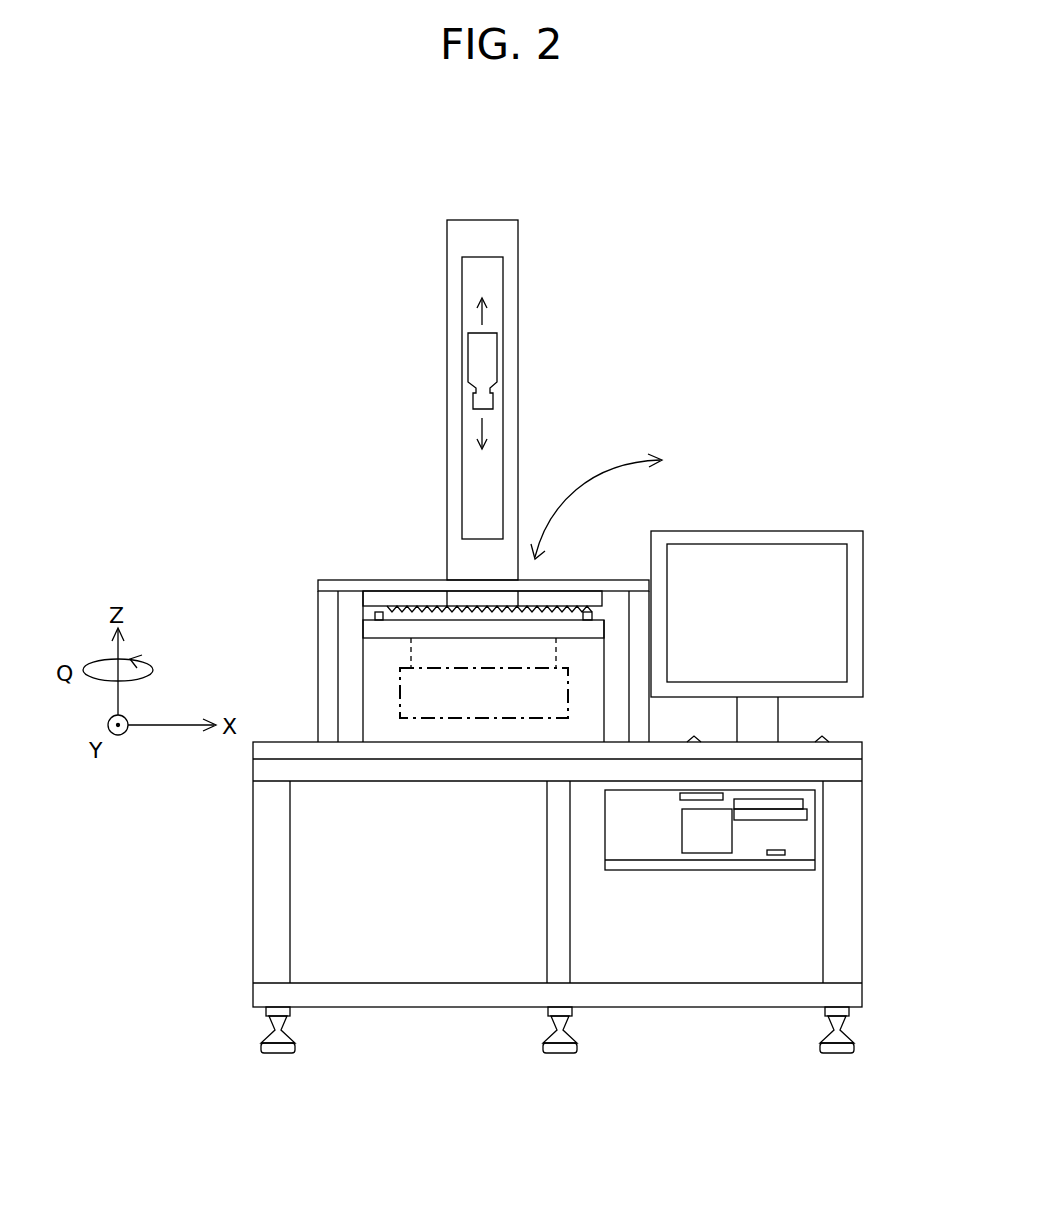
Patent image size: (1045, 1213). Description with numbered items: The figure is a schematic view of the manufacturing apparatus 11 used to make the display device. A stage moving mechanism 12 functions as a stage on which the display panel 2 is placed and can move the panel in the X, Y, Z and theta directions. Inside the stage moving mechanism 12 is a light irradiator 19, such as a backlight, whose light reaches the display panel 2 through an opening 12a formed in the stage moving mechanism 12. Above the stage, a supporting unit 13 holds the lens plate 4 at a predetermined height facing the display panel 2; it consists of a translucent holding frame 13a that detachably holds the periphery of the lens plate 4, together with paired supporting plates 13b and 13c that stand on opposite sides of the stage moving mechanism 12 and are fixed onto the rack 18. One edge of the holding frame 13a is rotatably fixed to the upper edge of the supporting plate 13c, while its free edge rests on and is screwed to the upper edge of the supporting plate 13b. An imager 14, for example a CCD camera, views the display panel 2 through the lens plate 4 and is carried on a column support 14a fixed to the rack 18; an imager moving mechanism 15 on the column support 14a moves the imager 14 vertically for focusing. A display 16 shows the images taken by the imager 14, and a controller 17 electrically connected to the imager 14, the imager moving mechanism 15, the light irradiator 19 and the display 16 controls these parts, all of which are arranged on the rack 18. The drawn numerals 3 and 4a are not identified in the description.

The display panel 2 is at (363, 624).
The support blocks 3 is at (348, 612).
The lens plate 4 is at (594, 591).
The mounting surface 4a is at (562, 605).
The manufacturing apparatus 11 is at (791, 242).
The stage moving mechanism 12 is at (387, 736).
The opening 12a is at (411, 641).
The supporting unit 13 is at (338, 580).
The holding frame 13a is at (398, 580).
The supporting plate 13b is at (318, 698).
The supporting plate 13c is at (650, 714).
The imager 14 is at (466, 356).
The column support 14a is at (447, 229).
The imager moving mechanism 15 is at (462, 424).
The display 16 is at (830, 531).
The controller 17 is at (782, 870).
The rack 18 is at (862, 776).
The light irradiator 19 is at (520, 720).